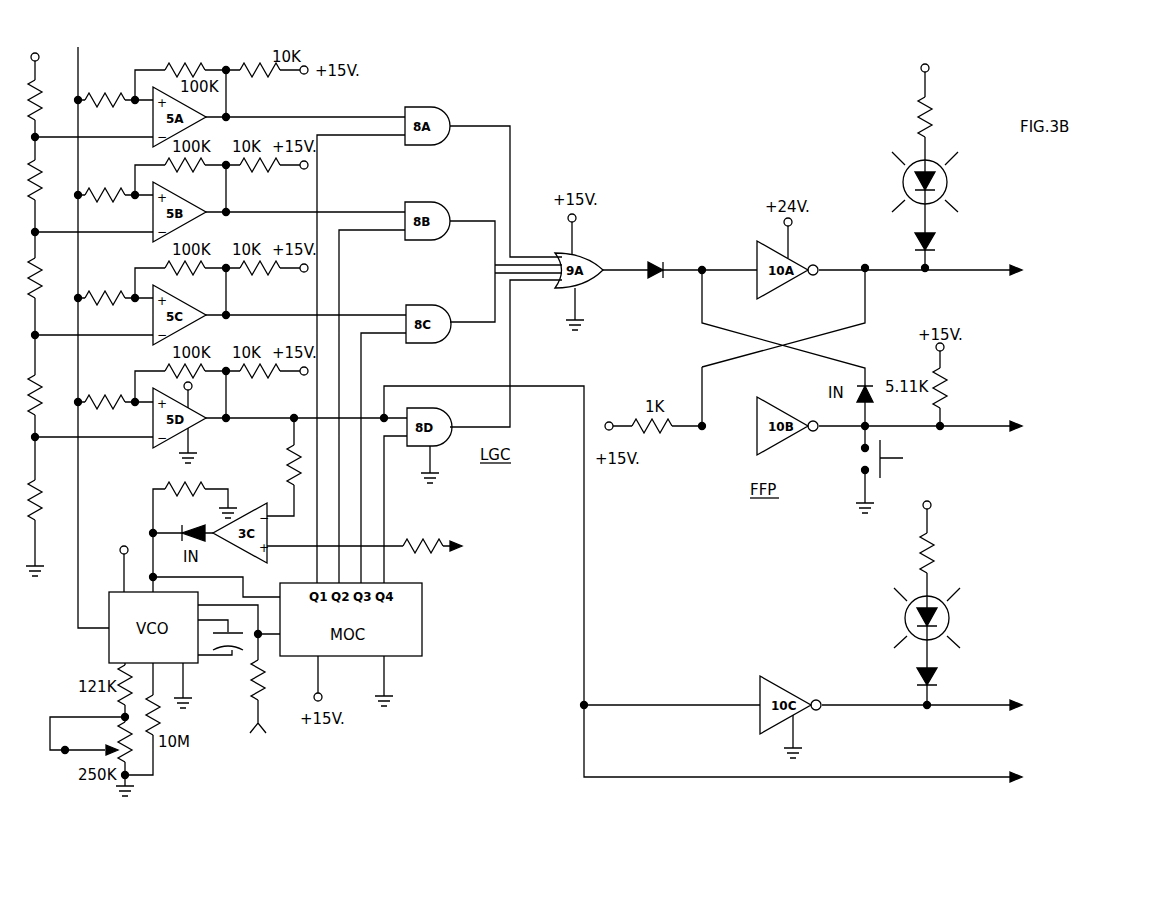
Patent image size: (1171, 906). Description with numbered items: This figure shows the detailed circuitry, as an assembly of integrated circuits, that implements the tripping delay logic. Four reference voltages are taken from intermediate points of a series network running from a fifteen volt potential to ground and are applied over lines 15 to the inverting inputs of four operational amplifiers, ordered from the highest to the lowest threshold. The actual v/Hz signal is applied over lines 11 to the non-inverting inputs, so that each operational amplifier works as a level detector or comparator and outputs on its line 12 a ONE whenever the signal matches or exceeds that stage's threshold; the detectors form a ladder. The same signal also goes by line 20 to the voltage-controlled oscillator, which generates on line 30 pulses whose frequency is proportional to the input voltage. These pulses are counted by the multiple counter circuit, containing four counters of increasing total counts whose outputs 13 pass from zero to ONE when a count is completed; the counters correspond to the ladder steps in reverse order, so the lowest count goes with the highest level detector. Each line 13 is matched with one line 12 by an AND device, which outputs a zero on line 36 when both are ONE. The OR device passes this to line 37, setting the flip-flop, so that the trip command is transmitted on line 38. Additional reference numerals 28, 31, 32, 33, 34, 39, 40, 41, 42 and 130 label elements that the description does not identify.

The lines 11 is at (145, 104).
The line 12 is at (343, 115).
The outputs 13 is at (317, 201).
The lines 15 is at (96, 140).
The line 20 is at (79, 600).
The voltage divider resistor chain 28 is at (38, 147).
The line 30 is at (258, 633).
The VCO output line 31 is at (246, 592).
The resistor 32 is at (288, 508).
The comparator 3C output line 33 is at (283, 546).
The supply node 34 is at (148, 520).
The line 36 is at (510, 185).
The line 37 is at (613, 268).
The line 38 is at (975, 272).
The flip-flop complementary output 39 is at (975, 425).
The Q4 output line 40 is at (584, 522).
The inverter input line 41 is at (677, 705).
The inverter output line 42 is at (853, 703).
The control circuit 130 is at (55, 616).